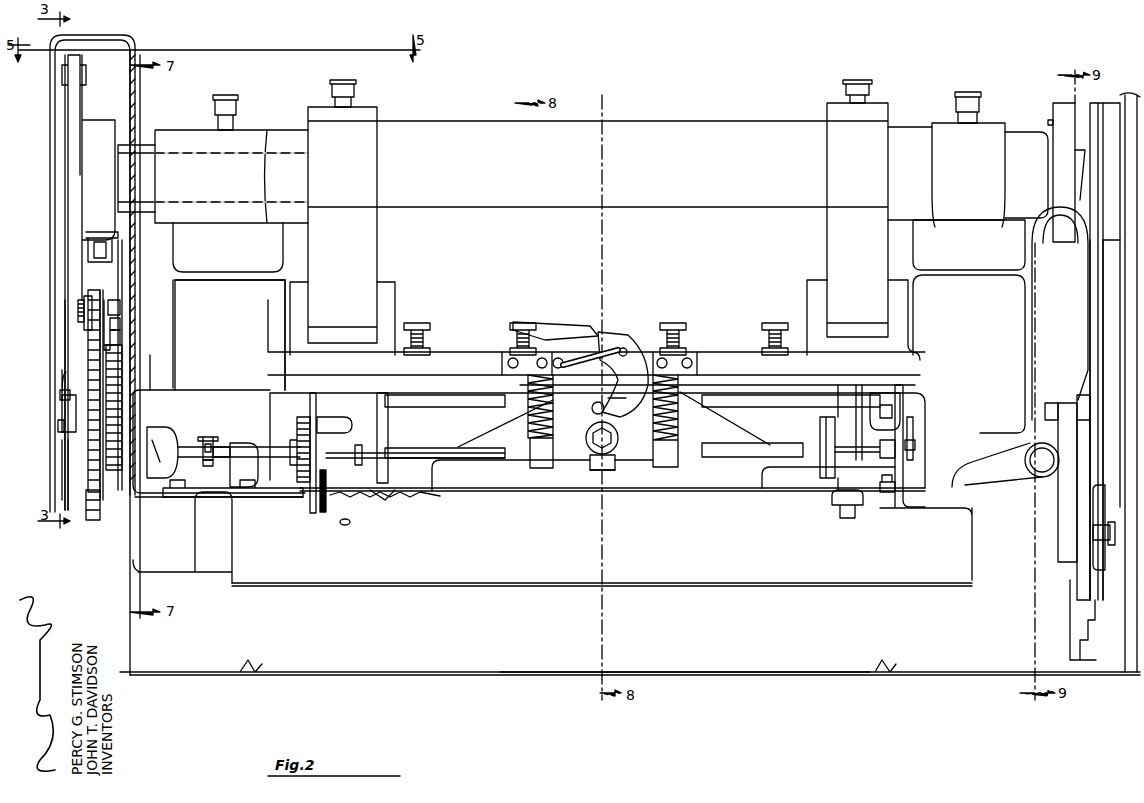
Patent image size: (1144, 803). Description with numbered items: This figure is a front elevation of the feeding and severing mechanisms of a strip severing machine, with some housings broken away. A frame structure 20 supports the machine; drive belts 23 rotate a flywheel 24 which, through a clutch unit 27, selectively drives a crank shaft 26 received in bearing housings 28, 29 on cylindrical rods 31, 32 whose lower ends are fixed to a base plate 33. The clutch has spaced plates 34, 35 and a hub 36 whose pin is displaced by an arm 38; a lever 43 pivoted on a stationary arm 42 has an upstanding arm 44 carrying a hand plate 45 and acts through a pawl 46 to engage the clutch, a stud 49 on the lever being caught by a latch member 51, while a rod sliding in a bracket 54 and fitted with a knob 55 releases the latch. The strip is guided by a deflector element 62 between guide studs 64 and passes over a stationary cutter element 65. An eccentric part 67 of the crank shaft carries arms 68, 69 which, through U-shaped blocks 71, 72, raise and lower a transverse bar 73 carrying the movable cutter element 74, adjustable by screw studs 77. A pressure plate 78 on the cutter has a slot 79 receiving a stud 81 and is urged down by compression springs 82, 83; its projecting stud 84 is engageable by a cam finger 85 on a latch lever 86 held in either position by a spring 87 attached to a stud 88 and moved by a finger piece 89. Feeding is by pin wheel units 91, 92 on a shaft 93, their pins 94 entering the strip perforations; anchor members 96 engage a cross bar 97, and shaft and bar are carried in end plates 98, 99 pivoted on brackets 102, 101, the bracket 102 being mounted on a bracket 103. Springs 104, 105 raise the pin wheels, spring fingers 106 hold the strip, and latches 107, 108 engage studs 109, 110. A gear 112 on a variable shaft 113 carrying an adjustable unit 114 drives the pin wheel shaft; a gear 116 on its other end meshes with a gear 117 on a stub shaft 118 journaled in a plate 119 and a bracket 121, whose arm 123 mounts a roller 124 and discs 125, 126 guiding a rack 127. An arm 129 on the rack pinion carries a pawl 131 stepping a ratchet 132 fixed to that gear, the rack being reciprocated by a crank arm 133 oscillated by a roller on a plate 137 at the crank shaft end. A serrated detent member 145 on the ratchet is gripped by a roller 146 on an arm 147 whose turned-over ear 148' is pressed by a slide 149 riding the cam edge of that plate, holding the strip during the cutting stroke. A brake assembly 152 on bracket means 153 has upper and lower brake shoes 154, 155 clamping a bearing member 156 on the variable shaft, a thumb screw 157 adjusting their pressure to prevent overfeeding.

The frame structure 20 is at (718, 650).
The drive belts 23 is at (1128, 674).
The flywheel 24 is at (1112, 360).
The crank shaft 26 is at (1047, 162).
The clutch unit 27 is at (1105, 278).
The bearing housing 28 is at (255, 130).
The bearing housing 29 is at (986, 128).
The cylindrical rod 31 is at (216, 280).
The cylindrical rod 32 is at (968, 272).
The base plate 33 is at (798, 674).
The clutch plate 34 is at (1053, 108).
The clutch plate 35 is at (1096, 112).
The hub 36 is at (1050, 122).
The arm 38 is at (1082, 182).
The stationary arm 42 is at (1078, 415).
The lever 43 is at (1092, 435).
The upstanding arm 44 is at (1080, 452).
The plate 45 is at (1082, 376).
The pawl 46 is at (1046, 410).
The stud 49 is at (1093, 533).
The latch member 51 is at (1098, 492).
The bracket 54 is at (970, 462).
The knob 55 is at (1025, 464).
The deflector element 62 is at (770, 586).
The guide studs 64 is at (852, 518).
The stationary cutter element 65 is at (712, 490).
The eccentric part 67 is at (434, 121).
The arm 68 is at (364, 105).
The arm 69 is at (830, 104).
The U-shaped block 71 is at (388, 285).
The U-shaped block 72 is at (812, 284).
The transverse bar 73 is at (724, 352).
The movable cutter element 74 is at (772, 477).
The screw studs 77 is at (776, 323).
The pressure plate 78 is at (514, 470).
The slot 79 is at (592, 478).
The stud 81 is at (619, 439).
The compression spring 82 is at (528, 420).
The compression spring 83 is at (680, 410).
The projecting stud 84 is at (592, 414).
The cam finger 85 is at (624, 406).
The latch lever 86 is at (618, 322).
The spring 87 is at (626, 349).
The stud 88 is at (618, 354).
The finger piece 89 is at (582, 325).
The pin wheel unit 91 is at (395, 478).
The pin wheel unit 92 is at (820, 420).
The shaft 93 is at (750, 443).
The pins 94 is at (386, 502).
The anchor members 96 is at (388, 412).
The cross bar 97 is at (748, 396).
The end plate 98 is at (312, 515).
The end plate 99 is at (900, 508).
The bracket 101 is at (914, 420).
The bracket 102 is at (304, 392).
The bracket 103 is at (150, 500).
The spring 104 is at (884, 492).
The spring 105 is at (332, 512).
The spring fingers 106 is at (400, 498).
The latch 107 is at (345, 417).
The latch 108 is at (872, 405).
The stud 109 is at (340, 462).
The stud 110 is at (880, 440).
The gear 112 is at (296, 420).
The supplemental shaft 113 is at (280, 447).
The unit 114 is at (162, 452).
The gear 116 is at (108, 492).
The gear 117 is at (124, 413).
The stub shaft 118 is at (60, 424).
The plate 119 is at (124, 282).
The bracket 121 is at (62, 478).
The arm 123 is at (62, 392).
The roller 124 is at (66, 404).
The disc 125 is at (100, 465).
The disc 126 is at (62, 372).
The rack 127 is at (66, 330).
The arm 129 is at (78, 303).
The pawl 131 is at (86, 310).
The ratchet 132 is at (90, 352).
The crank arm 133 is at (72, 100).
The plate 137 is at (96, 122).
The detent member 145 is at (112, 348).
The roller 146 is at (122, 337).
The arm 147 is at (122, 322).
The turned over ear 148' is at (158, 305).
The slide 149 is at (122, 268).
The brake assembly 152 is at (208, 478).
The bracket means 153 is at (238, 490).
The upper brake shoe 154 is at (214, 444).
The lower brake shoe 155 is at (220, 458).
The bearing member 156 is at (226, 447).
The thumb screw 157 is at (206, 436).